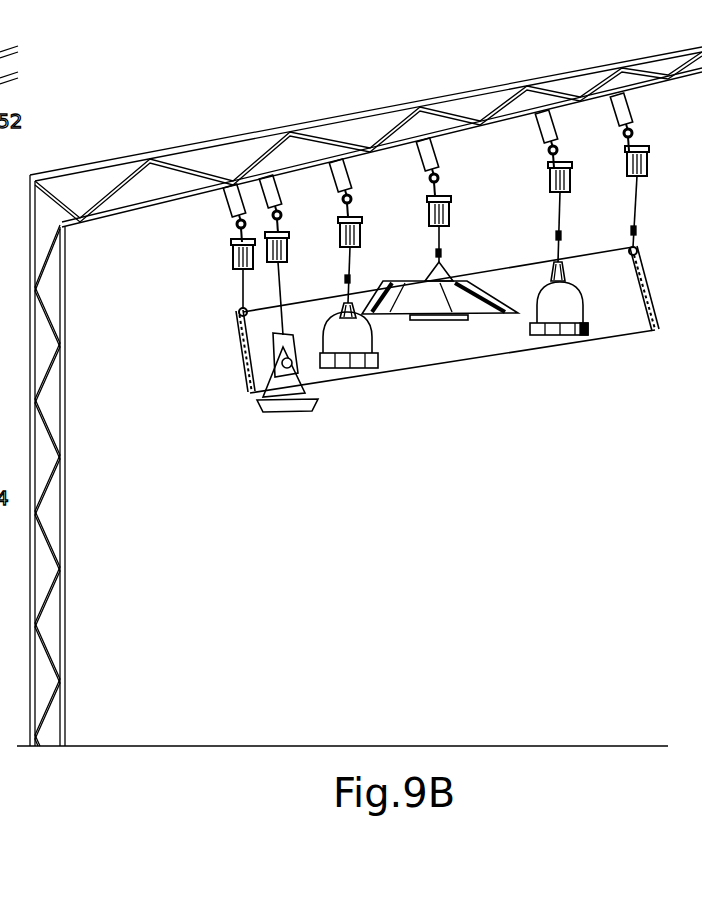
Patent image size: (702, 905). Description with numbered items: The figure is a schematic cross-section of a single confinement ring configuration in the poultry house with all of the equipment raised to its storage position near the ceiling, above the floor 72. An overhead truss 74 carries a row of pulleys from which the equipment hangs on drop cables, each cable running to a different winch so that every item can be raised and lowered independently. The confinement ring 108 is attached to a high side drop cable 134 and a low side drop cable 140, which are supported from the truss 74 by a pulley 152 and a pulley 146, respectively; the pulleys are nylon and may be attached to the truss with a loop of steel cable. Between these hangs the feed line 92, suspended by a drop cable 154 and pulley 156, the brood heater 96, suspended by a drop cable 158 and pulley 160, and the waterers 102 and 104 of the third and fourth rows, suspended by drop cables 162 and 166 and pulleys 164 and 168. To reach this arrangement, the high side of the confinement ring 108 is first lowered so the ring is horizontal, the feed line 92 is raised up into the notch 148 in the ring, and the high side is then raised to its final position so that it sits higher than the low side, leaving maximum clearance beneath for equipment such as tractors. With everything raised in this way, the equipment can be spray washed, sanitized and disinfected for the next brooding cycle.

The floor 72 is at (370, 746).
The truss 74 is at (157, 204).
The feed line 92 is at (251, 362).
The brood heater 96 is at (431, 303).
The waterer 102 is at (553, 313).
The waterer 104 is at (347, 348).
The confinement ring 108 is at (243, 373).
The high side drop cable 134 is at (637, 200).
The low side drop cable 140 is at (245, 282).
The pulley 146 is at (232, 262).
The notch 148 is at (270, 347).
The pulley 152 is at (648, 162).
The drop cable 154 is at (283, 288).
The pulley 156 is at (287, 245).
The drop cable 158 is at (443, 242).
The pulley 160 is at (452, 206).
The drop cable 162 is at (562, 222).
The pulley 164 is at (550, 183).
The drop cable 166 is at (352, 262).
The pulley 168 is at (360, 232).